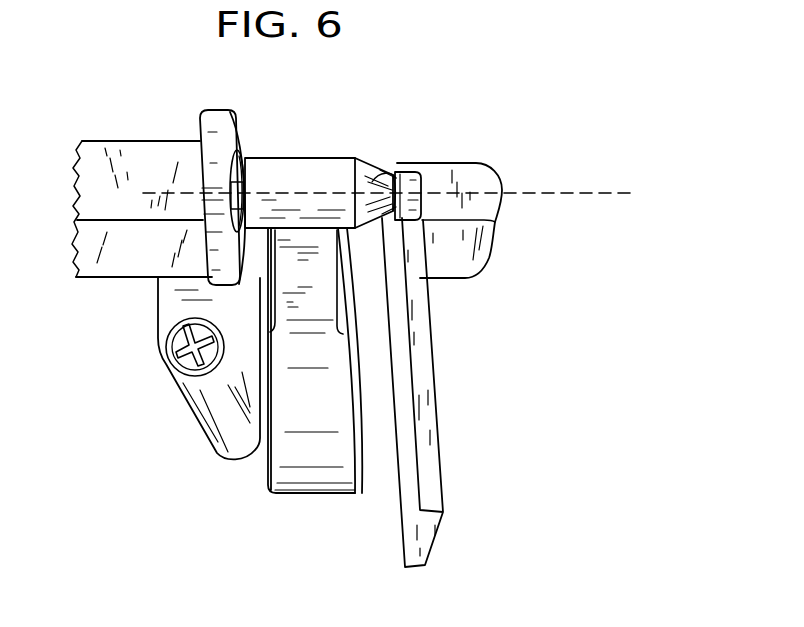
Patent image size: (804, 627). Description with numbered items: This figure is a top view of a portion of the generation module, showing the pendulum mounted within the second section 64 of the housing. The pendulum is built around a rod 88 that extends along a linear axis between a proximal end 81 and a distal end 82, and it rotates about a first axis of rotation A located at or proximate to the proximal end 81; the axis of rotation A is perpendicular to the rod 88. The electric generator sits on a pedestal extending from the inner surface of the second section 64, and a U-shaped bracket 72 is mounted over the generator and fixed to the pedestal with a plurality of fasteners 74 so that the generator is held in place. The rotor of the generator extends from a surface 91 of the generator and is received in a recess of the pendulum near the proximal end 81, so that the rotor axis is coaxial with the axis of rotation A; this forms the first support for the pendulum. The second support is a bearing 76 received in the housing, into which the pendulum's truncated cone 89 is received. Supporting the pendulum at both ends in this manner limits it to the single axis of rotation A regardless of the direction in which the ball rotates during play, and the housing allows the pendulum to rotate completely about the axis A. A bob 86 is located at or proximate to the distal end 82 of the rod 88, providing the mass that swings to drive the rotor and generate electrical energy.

The U-shaped bracket 72 is at (155, 153).
The surface 91 is at (239, 150).
The proximal end 81 is at (298, 178).
The truncated cone 89 is at (374, 180).
The bearing 76 is at (395, 204).
The second section 64 is at (437, 393).
The fasteners 74 is at (166, 368).
The bob 86 is at (337, 477).
The distal end 82 is at (366, 495).
The rod 88 is at (325, 302).
The first axis of rotation A is at (562, 193).